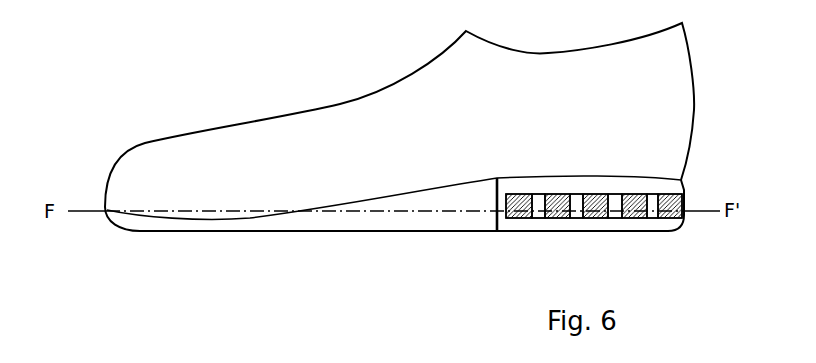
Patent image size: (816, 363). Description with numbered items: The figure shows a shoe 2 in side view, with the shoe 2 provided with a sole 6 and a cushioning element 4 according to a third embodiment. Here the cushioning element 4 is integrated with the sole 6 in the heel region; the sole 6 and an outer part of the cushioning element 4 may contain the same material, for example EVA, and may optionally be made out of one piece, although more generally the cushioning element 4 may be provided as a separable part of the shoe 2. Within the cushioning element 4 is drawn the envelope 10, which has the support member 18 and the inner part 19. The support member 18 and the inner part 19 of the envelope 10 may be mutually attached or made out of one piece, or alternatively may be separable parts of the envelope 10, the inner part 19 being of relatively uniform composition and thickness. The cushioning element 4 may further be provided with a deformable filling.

The shoe 2 is at (236, 81).
The cushioning element 4 is at (595, 219).
The sole 6 is at (469, 221).
The envelope 10 is at (520, 218).
The support member 18 is at (555, 218).
The inner part 19 is at (650, 216).